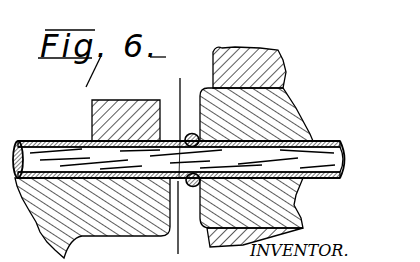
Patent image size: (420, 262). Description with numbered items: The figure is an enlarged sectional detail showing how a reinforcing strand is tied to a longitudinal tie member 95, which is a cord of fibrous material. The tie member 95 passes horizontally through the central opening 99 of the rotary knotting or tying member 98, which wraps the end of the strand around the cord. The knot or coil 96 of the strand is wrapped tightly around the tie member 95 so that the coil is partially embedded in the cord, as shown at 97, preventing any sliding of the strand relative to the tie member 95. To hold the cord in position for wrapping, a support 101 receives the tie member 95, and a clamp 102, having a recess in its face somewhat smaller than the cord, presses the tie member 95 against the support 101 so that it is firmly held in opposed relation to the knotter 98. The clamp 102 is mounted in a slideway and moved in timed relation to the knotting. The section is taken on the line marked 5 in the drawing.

The longitudinal tie member 95 is at (47, 154).
The knot or coil 96 is at (192, 134).
The partial embedding of the coil 97 is at (193, 186).
The rotary knotting or tying member 98 is at (275, 98).
The central opening 99 is at (302, 118).
The support 101 is at (117, 186).
The clamp 102 is at (110, 124).
The section line 5- 5 is at (180, 78).